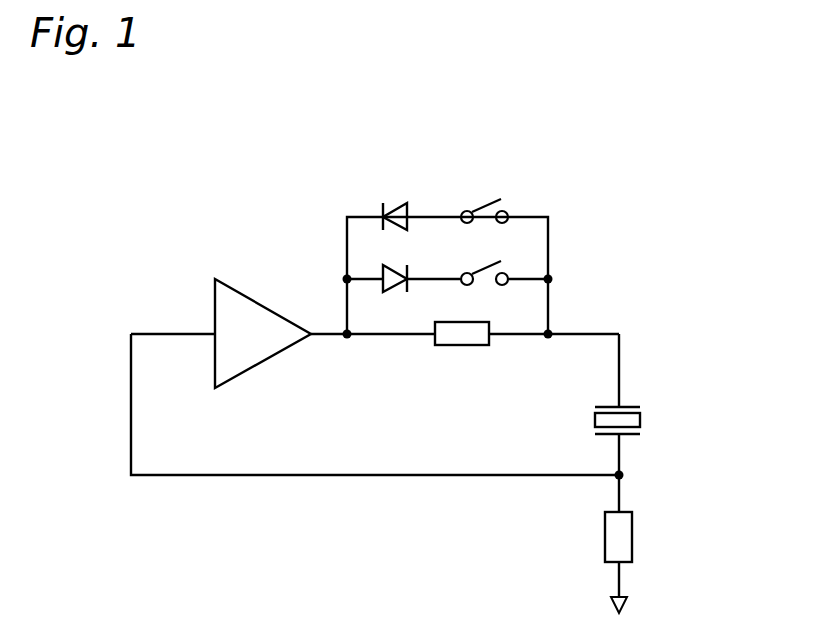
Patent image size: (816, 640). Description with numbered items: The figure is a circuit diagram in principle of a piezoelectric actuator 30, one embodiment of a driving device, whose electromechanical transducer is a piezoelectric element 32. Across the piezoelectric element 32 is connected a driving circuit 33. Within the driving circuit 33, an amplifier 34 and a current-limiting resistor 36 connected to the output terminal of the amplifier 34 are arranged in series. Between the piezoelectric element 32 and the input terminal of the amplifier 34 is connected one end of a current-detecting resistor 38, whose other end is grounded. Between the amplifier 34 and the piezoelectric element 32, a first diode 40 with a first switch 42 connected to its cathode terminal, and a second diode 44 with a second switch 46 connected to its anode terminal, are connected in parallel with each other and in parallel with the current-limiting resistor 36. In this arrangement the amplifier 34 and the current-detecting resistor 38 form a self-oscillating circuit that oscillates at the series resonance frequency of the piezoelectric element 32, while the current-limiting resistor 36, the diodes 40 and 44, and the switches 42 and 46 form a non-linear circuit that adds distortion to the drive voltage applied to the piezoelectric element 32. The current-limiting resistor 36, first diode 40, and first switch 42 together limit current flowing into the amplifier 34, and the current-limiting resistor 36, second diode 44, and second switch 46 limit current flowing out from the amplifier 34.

The piezoelectric actuator 30 is at (690, 151).
The piezoelectric element 32 is at (641, 420).
The driving circuit 33 is at (622, 333).
The amplifier 34 is at (213, 300).
The current-limiting resistor 36 is at (468, 346).
The current-detecting resistor 38 is at (632, 530).
The first diode 40 is at (383, 264).
The first switch 42 is at (481, 264).
The second diode 44 is at (398, 203).
The second switch 46 is at (497, 198).